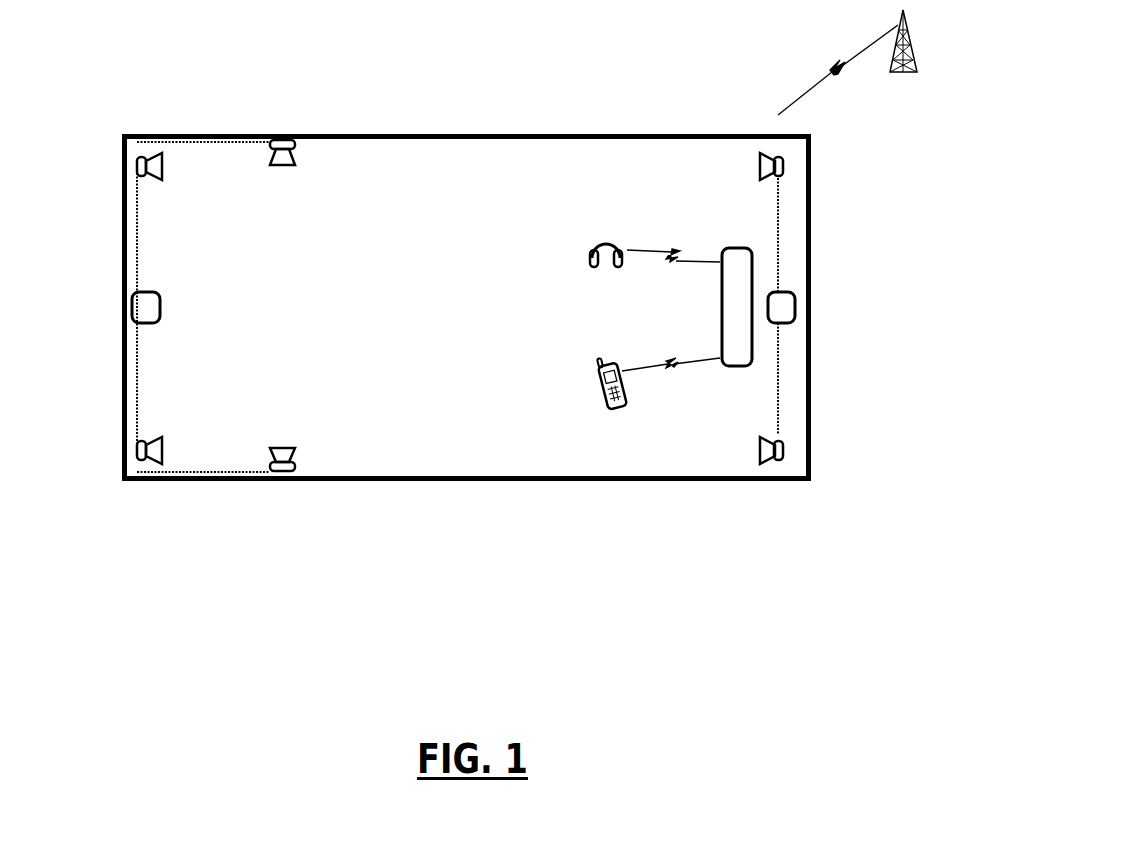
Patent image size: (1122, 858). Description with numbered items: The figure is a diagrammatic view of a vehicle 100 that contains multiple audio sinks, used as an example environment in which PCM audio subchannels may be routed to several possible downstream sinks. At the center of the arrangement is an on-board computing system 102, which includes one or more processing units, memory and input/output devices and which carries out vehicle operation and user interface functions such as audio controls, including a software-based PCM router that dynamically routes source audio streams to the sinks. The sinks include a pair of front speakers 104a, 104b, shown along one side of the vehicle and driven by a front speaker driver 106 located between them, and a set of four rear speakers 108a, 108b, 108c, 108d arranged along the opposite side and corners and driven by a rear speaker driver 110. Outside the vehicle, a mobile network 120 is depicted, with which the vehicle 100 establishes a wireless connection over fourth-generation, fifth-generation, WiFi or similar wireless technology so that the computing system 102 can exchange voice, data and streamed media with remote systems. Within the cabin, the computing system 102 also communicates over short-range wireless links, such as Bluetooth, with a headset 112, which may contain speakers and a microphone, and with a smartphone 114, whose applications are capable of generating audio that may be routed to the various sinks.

The vehicle 100 is at (445, 578).
The on-board computing system 102 is at (737, 248).
The front speaker 104a is at (783, 166).
The front speaker 104b is at (783, 451).
The front speaker driver 106 is at (795, 305).
The rear speaker 108a is at (283, 135).
The rear speaker 108b is at (137, 166).
The rear speaker 108c is at (137, 450).
The rear speaker 108d is at (306, 475).
The rear speaker driver 110 is at (160, 308).
The headset 112 is at (582, 280).
The smartphone 114 is at (602, 416).
The mobile network 120 is at (905, 76).